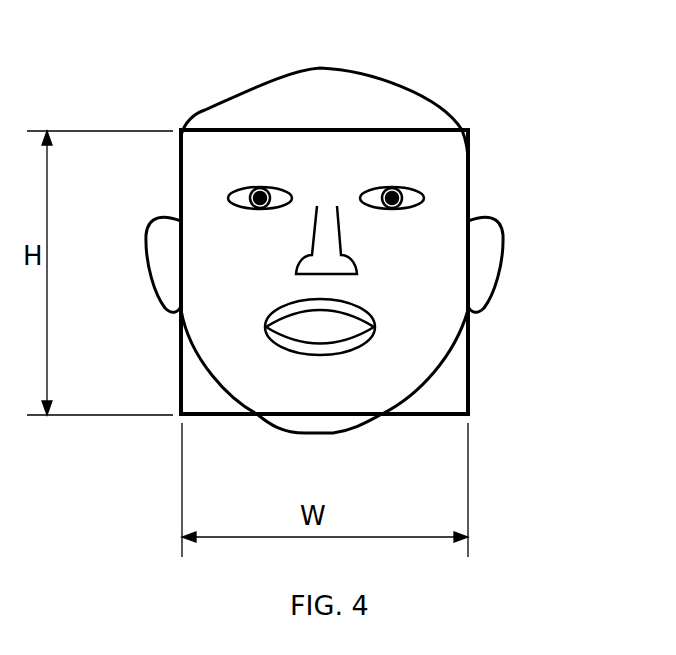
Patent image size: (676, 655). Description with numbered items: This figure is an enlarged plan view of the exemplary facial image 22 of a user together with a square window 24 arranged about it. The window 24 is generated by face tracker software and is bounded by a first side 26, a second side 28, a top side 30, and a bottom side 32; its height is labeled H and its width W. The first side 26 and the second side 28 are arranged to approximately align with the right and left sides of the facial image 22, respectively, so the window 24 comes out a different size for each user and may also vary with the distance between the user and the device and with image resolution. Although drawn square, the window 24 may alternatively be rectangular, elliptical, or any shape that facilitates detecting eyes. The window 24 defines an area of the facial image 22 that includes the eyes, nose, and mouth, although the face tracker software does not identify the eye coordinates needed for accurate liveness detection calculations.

The facial image 22 is at (320, 68).
The window 24 is at (472, 129).
The first side 26 is at (181, 190).
The second side 28 is at (468, 360).
The top side 30 is at (405, 129).
The bottom side 32 is at (404, 416).